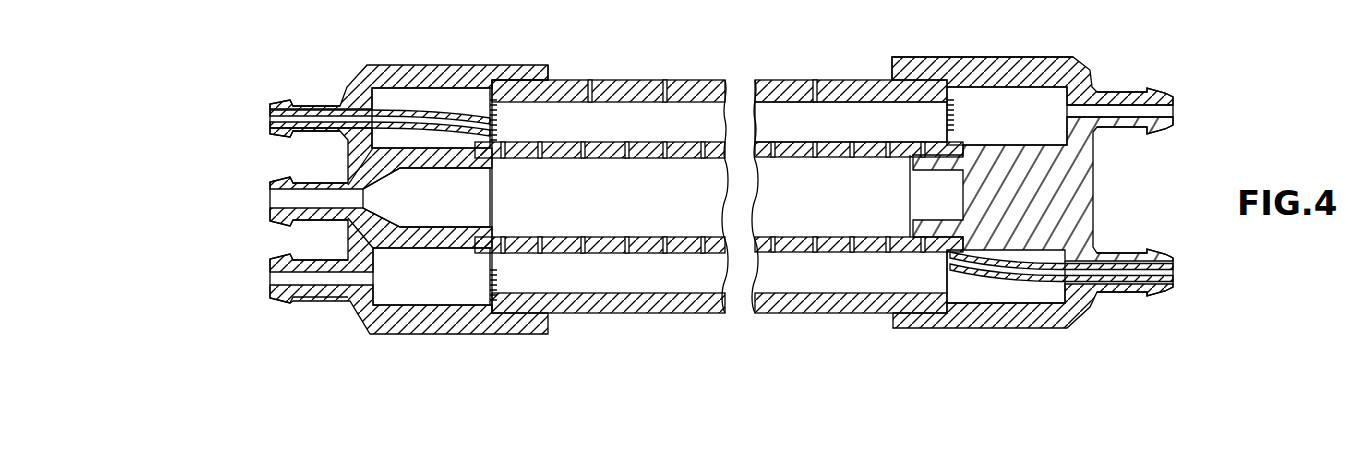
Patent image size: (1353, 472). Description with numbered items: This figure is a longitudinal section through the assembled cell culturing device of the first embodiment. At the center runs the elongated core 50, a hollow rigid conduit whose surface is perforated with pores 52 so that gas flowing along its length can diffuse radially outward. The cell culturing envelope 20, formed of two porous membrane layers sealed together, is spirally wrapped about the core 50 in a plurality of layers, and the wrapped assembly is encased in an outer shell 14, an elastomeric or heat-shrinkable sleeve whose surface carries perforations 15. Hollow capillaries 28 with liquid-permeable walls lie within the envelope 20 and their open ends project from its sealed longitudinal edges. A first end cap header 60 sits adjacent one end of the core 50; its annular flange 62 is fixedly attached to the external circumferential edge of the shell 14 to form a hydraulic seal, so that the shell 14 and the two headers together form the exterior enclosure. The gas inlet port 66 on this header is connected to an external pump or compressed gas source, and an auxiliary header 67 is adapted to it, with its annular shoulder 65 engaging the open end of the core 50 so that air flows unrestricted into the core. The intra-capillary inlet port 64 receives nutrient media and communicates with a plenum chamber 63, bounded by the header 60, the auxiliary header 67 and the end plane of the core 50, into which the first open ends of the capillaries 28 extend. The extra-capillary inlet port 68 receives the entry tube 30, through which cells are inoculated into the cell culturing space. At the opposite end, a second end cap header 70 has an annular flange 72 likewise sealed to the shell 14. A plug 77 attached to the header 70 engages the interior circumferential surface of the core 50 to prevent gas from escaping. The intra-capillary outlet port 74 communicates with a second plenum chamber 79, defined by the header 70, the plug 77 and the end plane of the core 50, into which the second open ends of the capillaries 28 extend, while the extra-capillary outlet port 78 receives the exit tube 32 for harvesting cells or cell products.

The outer shell 14 is at (745, 80).
The perforations 15 is at (665, 80).
The cell culturing envelope 20 is at (858, 117).
The capillaries 28 is at (489, 103).
The entry tube 30 is at (402, 110).
The exit tube 32 is at (1040, 284).
The core 50 is at (800, 140).
The pores 52 is at (627, 237).
The first end cap header 60 is at (312, 327).
The annular flange 62 is at (546, 63).
The plenum chamber 63 is at (440, 100).
The intra-capillary inlet port 64 is at (270, 268).
The annular shoulder 65 is at (478, 234).
The gas inlet port 66 is at (270, 216).
The auxiliary header 67 is at (432, 216).
The extra-capillary inlet port 68 is at (290, 92).
The second end cap header 70 is at (1127, 37).
The annular flange 72 is at (910, 63).
The intra-capillary outlet port 74 is at (1171, 97).
The plug 77 is at (1043, 197).
The extra-capillary outlet port 78 is at (1158, 253).
The plenum chamber 79 is at (1027, 115).